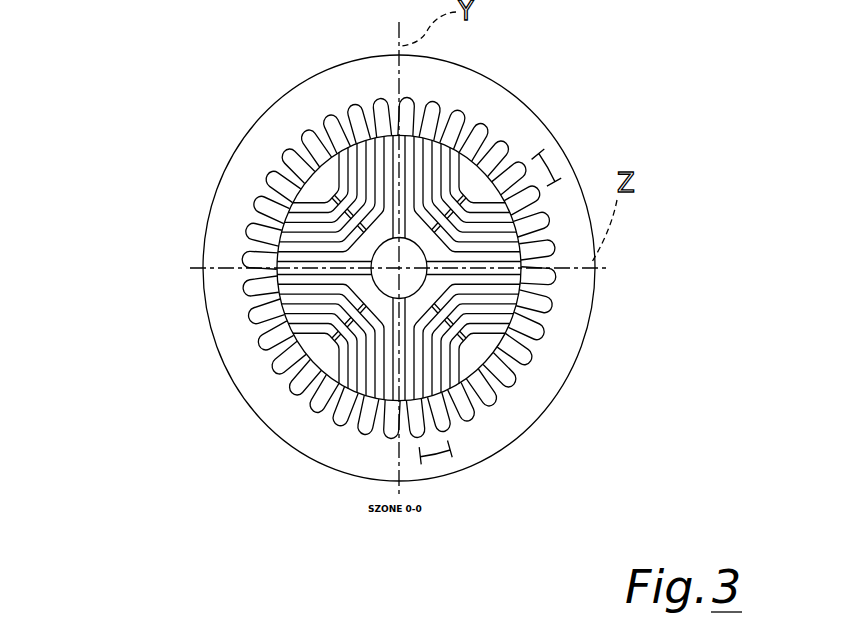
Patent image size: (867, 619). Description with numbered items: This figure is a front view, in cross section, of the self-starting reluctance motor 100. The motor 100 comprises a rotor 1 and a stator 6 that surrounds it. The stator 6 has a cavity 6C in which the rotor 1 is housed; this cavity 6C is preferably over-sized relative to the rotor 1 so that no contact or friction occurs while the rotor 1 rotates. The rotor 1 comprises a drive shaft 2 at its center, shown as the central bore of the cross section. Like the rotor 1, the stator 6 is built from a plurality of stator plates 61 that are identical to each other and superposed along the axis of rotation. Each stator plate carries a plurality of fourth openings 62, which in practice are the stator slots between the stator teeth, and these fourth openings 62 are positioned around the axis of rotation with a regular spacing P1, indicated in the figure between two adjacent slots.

The motor 100 is at (181, 109).
The stator 6 is at (204, 222).
The rotor 1 is at (538, 343).
The cavity 6C is at (346, 136).
The stator plates 61 is at (493, 105).
The fourth openings 62 is at (272, 378).
The regular spacing P1 is at (549, 166).
The drive shaft 2 is at (382, 290).